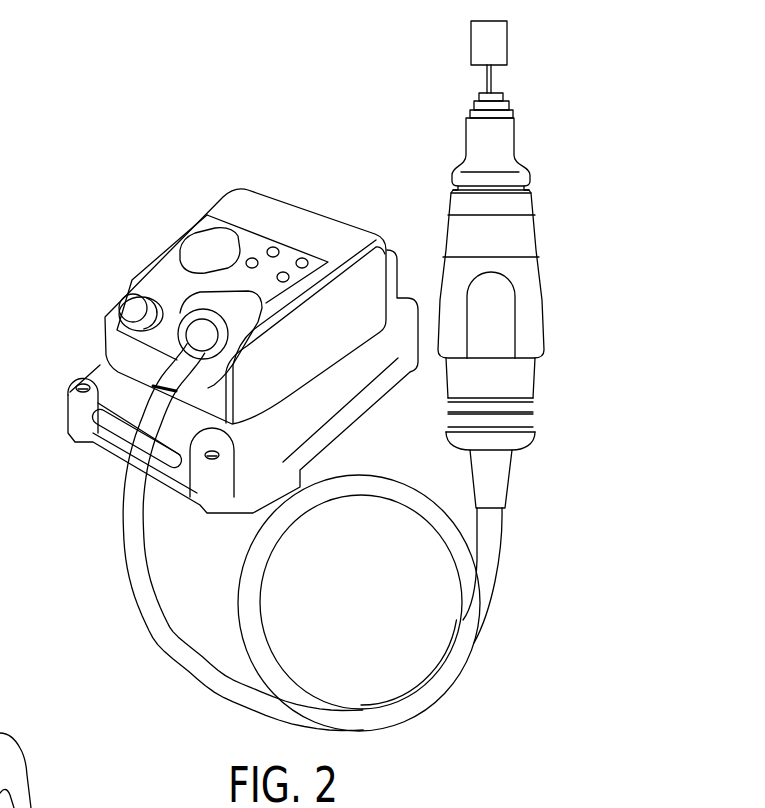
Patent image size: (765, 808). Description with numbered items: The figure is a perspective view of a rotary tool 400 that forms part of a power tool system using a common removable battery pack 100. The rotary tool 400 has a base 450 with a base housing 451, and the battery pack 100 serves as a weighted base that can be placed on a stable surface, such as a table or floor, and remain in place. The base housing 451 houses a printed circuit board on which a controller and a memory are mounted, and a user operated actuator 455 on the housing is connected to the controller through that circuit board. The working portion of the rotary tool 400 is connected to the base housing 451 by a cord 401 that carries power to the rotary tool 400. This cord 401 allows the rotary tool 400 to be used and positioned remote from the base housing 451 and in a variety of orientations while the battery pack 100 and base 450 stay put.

The base 450 is at (327, 152).
The base housing 451 is at (178, 238).
The user operated actuator 455 is at (129, 304).
The battery pack 100 is at (79, 389).
The cord 401 is at (470, 647).
The rotary tool 400 is at (595, 263).